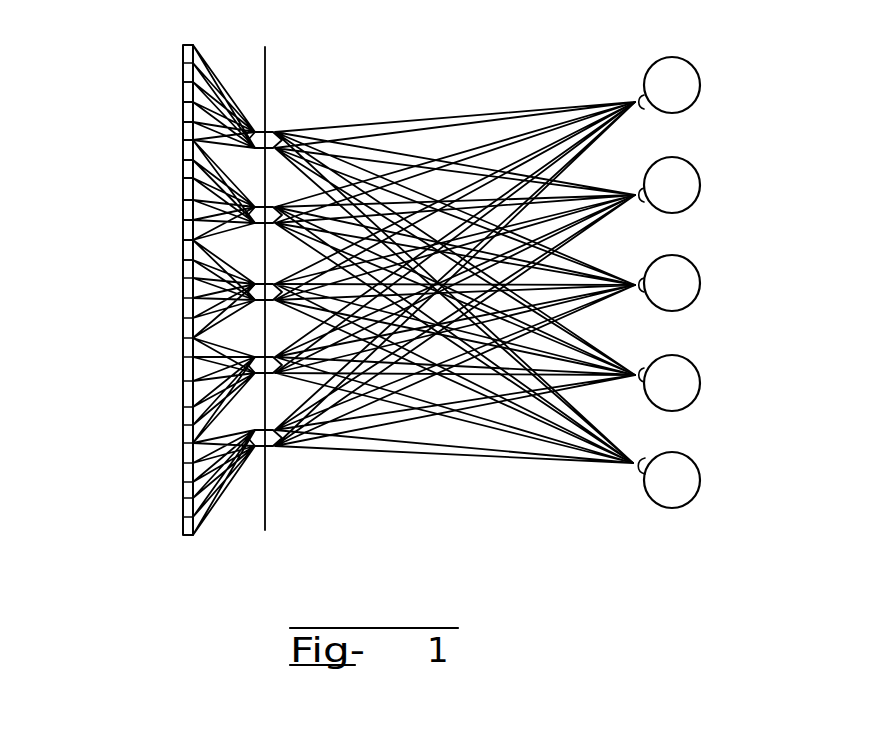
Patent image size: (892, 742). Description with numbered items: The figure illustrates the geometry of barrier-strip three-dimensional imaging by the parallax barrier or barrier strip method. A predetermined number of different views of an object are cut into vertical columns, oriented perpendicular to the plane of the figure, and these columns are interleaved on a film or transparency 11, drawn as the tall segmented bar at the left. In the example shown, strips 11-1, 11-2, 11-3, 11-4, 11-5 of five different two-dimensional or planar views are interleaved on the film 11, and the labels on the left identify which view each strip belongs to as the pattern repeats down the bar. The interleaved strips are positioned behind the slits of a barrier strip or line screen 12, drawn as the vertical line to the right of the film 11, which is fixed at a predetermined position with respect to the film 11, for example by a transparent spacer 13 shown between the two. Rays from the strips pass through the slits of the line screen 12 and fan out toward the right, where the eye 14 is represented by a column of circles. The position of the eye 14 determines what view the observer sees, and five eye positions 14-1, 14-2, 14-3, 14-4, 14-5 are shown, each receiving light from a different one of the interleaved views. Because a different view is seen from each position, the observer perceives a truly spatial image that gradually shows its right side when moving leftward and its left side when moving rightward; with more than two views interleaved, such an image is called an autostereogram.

The film or transparency 11 is at (158, 470).
The strip of first view 11-1 is at (183, 150).
The strip of second view 11-2 is at (183, 127).
The strip of third view 11-3 is at (183, 110).
The strip of fourth view 11-4 is at (183, 88).
The strip of fifth view 11-5 is at (183, 165).
The barrier strip or line screen 12 is at (265, 520).
The transparent spacer 13 is at (240, 495).
The eye 14 is at (720, 310).
The first eye position 14-1 is at (700, 85).
The second eye position 14-2 is at (700, 185).
The third eye position 14-3 is at (700, 283).
The fourth eye position 14-4 is at (700, 383).
The fifth eye position 14-5 is at (700, 480).